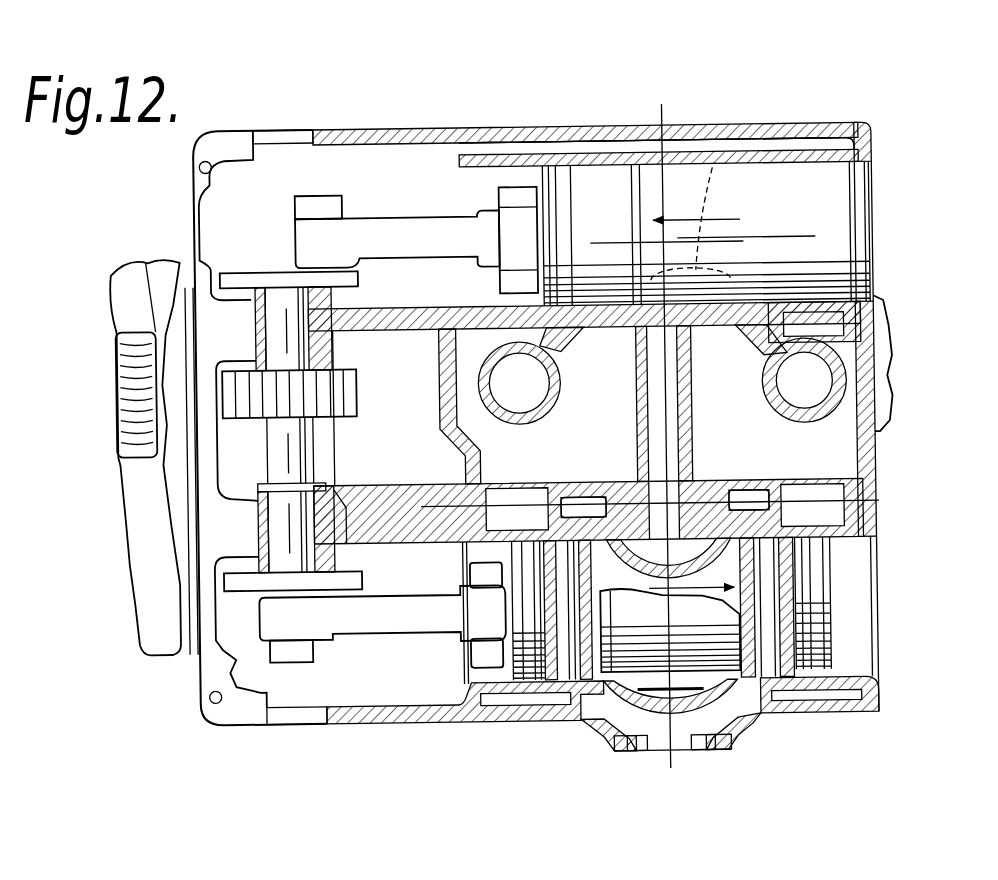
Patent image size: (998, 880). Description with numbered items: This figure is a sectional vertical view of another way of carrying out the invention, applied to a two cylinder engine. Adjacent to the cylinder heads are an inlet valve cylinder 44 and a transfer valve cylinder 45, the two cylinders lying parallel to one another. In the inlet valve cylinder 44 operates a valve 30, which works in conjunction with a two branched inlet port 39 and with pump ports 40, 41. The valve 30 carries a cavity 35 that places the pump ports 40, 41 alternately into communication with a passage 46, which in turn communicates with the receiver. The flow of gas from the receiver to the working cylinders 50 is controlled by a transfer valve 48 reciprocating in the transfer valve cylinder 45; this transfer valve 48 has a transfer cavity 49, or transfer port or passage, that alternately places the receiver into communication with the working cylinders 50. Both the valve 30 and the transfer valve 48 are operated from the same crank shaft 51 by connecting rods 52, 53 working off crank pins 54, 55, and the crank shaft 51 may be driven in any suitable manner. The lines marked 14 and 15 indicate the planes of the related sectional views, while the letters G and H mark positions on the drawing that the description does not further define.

The section line 14- 14 is at (427, 492).
The section line 15- 15 is at (666, 120).
The valve 30 is at (582, 650).
The cavity 35 is at (630, 548).
The two branched inlet port 39 is at (713, 718).
The pump port 40 is at (583, 508).
The pump port 41 is at (743, 504).
The inlet valve cylinder 44 is at (837, 682).
The transfer valve cylinder 45 is at (698, 153).
The passage 46 is at (667, 415).
The transfer valve 48 is at (597, 197).
The transfer cavity 49 is at (735, 148).
The working cylinders 50 is at (662, 375).
The crank shaft 51 is at (293, 447).
The connecting rod 52 is at (367, 615).
The connecting rod 53 is at (380, 235).
The crank pin 54 is at (283, 647).
The crank pin 55 is at (300, 200).
The lever G is at (110, 396).
The boss H is at (900, 382).